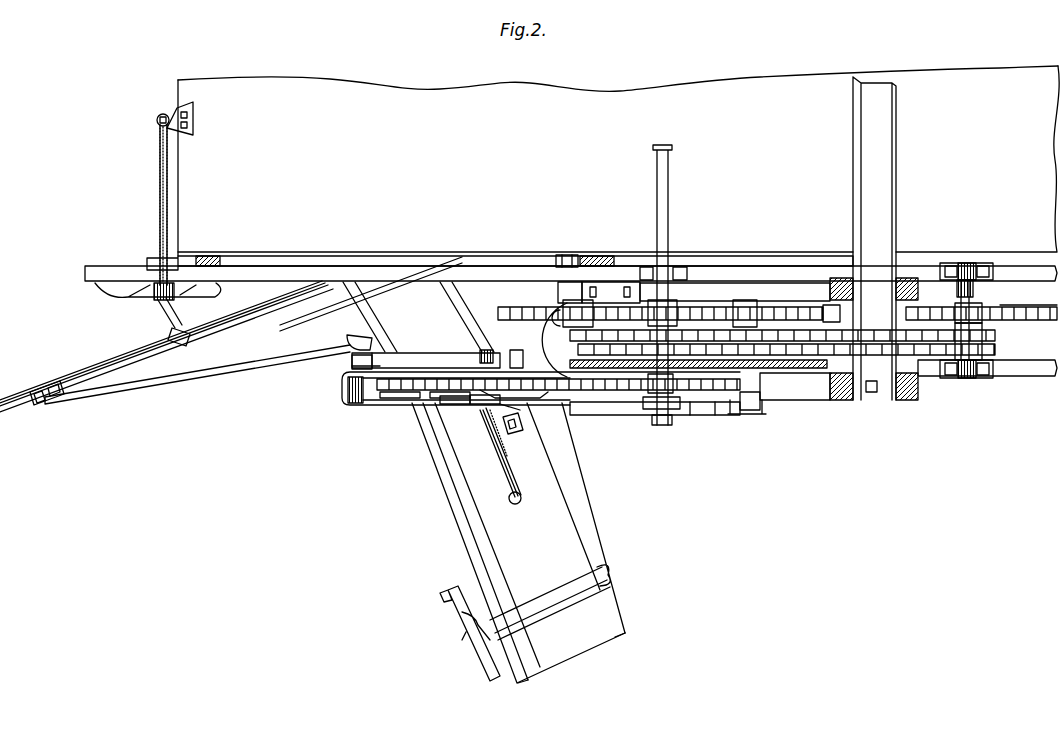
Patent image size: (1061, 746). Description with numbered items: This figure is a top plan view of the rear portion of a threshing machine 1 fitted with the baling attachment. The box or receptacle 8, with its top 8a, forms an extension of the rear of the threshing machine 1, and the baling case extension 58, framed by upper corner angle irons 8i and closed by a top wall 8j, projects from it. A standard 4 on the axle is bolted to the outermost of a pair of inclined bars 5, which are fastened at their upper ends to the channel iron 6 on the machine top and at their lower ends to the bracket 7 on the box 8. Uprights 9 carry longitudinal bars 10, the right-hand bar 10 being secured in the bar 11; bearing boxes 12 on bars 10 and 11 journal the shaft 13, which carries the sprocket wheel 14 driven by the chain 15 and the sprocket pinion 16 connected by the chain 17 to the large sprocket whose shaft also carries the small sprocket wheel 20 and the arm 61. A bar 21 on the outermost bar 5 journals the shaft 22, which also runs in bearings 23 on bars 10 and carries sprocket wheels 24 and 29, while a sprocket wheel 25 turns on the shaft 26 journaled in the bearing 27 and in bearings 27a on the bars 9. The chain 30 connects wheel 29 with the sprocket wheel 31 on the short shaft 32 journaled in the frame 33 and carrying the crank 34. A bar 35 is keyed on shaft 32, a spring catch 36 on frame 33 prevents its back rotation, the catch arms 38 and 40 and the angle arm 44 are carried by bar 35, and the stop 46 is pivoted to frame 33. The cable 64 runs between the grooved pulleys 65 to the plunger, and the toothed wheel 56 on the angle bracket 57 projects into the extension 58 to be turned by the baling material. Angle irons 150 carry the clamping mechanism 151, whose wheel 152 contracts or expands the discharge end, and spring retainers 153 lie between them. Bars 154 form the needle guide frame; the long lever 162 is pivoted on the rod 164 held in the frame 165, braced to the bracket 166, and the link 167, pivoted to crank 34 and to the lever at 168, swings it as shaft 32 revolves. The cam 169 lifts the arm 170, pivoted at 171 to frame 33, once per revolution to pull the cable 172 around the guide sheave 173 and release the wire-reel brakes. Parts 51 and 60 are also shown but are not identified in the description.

The threshing machine 1 is at (618, 159).
The standard 4 is at (747, 418).
The inclined bars 5 is at (779, 339).
The channel iron 6 is at (874, 238).
The bracket 7 is at (545, 340).
The box or receptacle 8 is at (233, 168).
The top of box 8a is at (355, 92).
The upper corner angle irons 8i is at (625, 634).
The top wall of baling case extension 8j is at (575, 660).
The uprights 9 is at (208, 256).
The longitudinal bars 10 is at (308, 282).
The bar 11 is at (1040, 377).
The bearing boxes 12 is at (960, 263).
The shaft 13 is at (975, 296).
The sprocket wheel 14 is at (998, 307).
The driven chain 15 is at (1029, 296).
The sprocket pinion 16 is at (996, 337).
The chain 17 is at (996, 350).
The small sprocket wheel 20 is at (837, 316).
The bar 21 is at (617, 416).
The shaft 22 is at (662, 426).
The bearings 23 is at (668, 268).
The sprocket wheel 24 is at (712, 300).
The sprocket wheel 25 is at (558, 292).
The shaft 26 is at (585, 318).
The bearing 27 is at (611, 292).
The bearings 27a is at (560, 255).
The sprocket wheel 29 is at (698, 392).
The chain 30 is at (720, 392).
The sprocket wheel 31 is at (360, 397).
The short shaft 32 is at (508, 352).
The frame 33 is at (342, 386).
The rigid crank 34 is at (408, 355).
The bar 35 is at (385, 398).
The spring catch 36 is at (352, 408).
The catch arm 38 is at (521, 392).
The catch arm 40 is at (470, 400).
The overhanging angle arm 44 is at (495, 405).
The stop 46 is at (540, 406).
The pivot block 51 is at (513, 423).
The toothed wheel 56 is at (518, 470).
The angle bracket 57 is at (525, 437).
The baling case extension 58 is at (568, 518).
The pawl 60 is at (440, 398).
The arm 61 is at (782, 400).
The cable 64 is at (790, 370).
The grooved pulleys 65 is at (603, 393).
The angle irons 150 is at (458, 540).
The clamping mechanism 151 is at (556, 611).
The wheel 152 is at (478, 640).
The spring retainers 153 is at (306, 322).
The bars 154 is at (25, 392).
The long lever 162 is at (148, 340).
The rod 164 is at (158, 193).
The frame 165 is at (134, 298).
The bracket 166 is at (165, 112).
The link 167 is at (195, 378).
The pivot 168 is at (48, 406).
The cam 169 is at (398, 345).
The arm 170 is at (352, 368).
The pivot 171 is at (352, 358).
The cable 172 is at (474, 255).
The guide sheave 173 is at (482, 350).